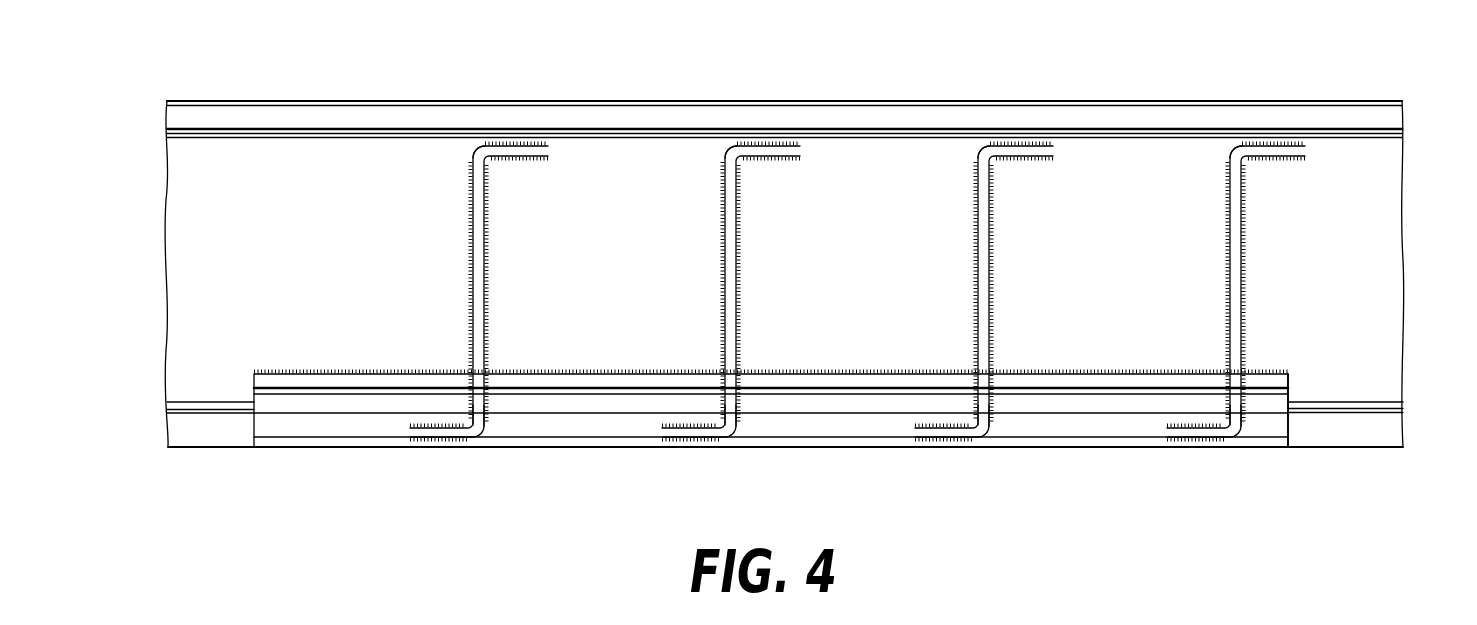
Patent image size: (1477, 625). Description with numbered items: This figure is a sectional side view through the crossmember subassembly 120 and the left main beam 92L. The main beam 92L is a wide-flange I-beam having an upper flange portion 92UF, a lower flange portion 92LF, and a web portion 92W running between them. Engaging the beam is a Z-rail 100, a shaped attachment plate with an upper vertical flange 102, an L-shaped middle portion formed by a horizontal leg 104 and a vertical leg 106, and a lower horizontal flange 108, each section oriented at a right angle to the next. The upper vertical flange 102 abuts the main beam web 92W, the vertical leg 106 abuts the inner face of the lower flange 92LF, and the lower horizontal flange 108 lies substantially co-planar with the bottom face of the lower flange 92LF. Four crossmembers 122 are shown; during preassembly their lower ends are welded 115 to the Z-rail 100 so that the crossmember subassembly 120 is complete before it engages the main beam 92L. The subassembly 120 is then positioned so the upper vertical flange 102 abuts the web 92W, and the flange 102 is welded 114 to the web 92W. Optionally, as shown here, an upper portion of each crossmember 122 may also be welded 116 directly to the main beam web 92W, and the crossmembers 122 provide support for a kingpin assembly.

The upper flange portion 92UF is at (197, 107).
The left main beam 92L is at (294, 99).
The web portion 92W is at (182, 168).
The lower flange portion 92LF is at (203, 430).
The Z-rail 100 is at (1302, 393).
The upper vertical flange 102 is at (286, 380).
The horizontal leg 104 is at (338, 383).
The vertical leg 106 is at (392, 425).
The lower horizontal flange 108 is at (569, 437).
The weld 114 is at (1072, 373).
The weld 115 is at (486, 428).
The weld 116 is at (486, 228).
The crossmember subassembly 120 is at (1266, 262).
The crossmember 122 is at (475, 146).